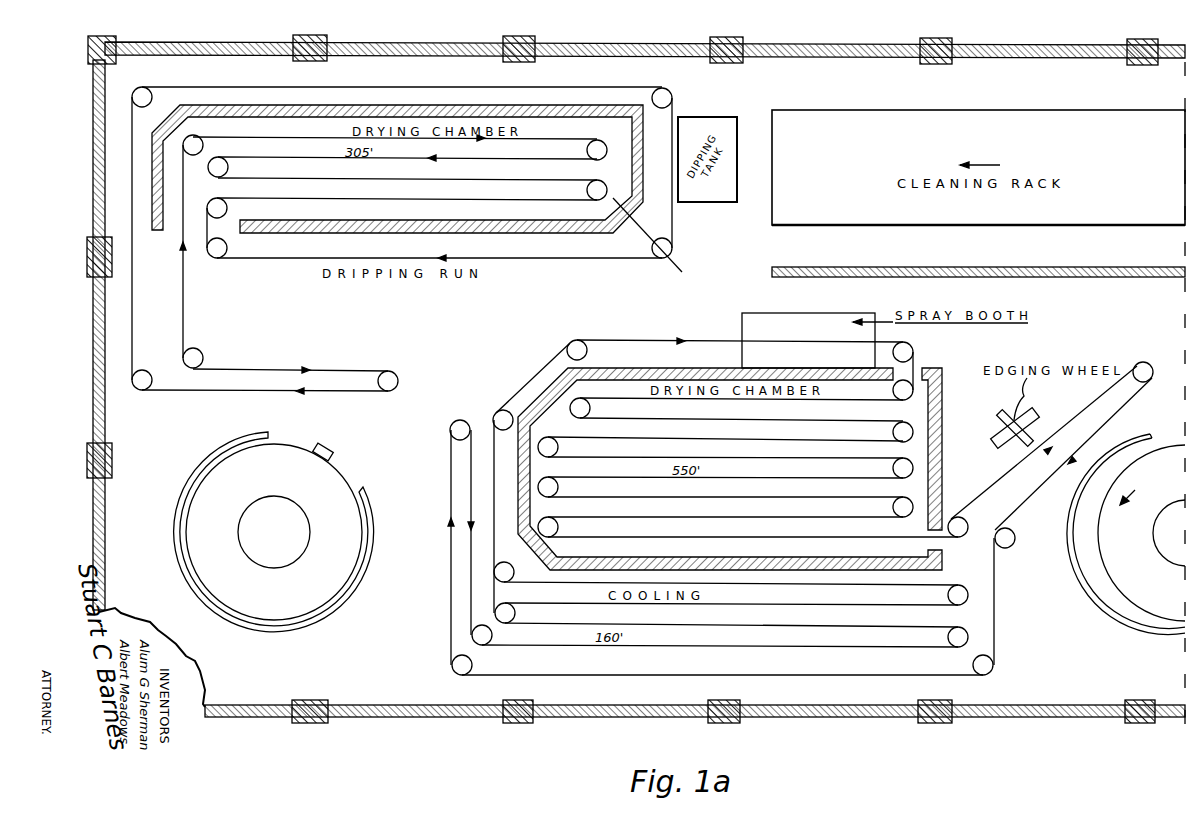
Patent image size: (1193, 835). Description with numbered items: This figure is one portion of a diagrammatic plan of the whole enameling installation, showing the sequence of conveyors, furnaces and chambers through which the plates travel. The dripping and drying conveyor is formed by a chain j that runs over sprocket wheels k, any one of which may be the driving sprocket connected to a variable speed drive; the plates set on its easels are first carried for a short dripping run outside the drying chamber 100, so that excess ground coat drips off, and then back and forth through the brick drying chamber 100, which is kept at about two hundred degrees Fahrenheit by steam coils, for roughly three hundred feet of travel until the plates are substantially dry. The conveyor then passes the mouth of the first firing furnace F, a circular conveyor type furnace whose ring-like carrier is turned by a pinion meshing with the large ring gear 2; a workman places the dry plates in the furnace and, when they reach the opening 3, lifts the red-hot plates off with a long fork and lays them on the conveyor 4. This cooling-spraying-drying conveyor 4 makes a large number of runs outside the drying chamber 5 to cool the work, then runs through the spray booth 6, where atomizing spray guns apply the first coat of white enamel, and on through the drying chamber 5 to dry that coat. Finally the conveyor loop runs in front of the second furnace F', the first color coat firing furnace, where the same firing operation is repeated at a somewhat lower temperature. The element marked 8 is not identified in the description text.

The drying chamber 100 is at (420, 109).
The sprocket wheels k is at (672, 97).
The chain j is at (603, 260).
The door 8 is at (634, 247).
The spray booth 6 is at (793, 313).
The drying chamber 5 is at (945, 420).
The conveyor 4 is at (444, 490).
The first firing furnace F is at (264, 518).
The opening 3 is at (357, 477).
The ring gear 2 is at (297, 438).
The second furnace F' is at (1121, 534).